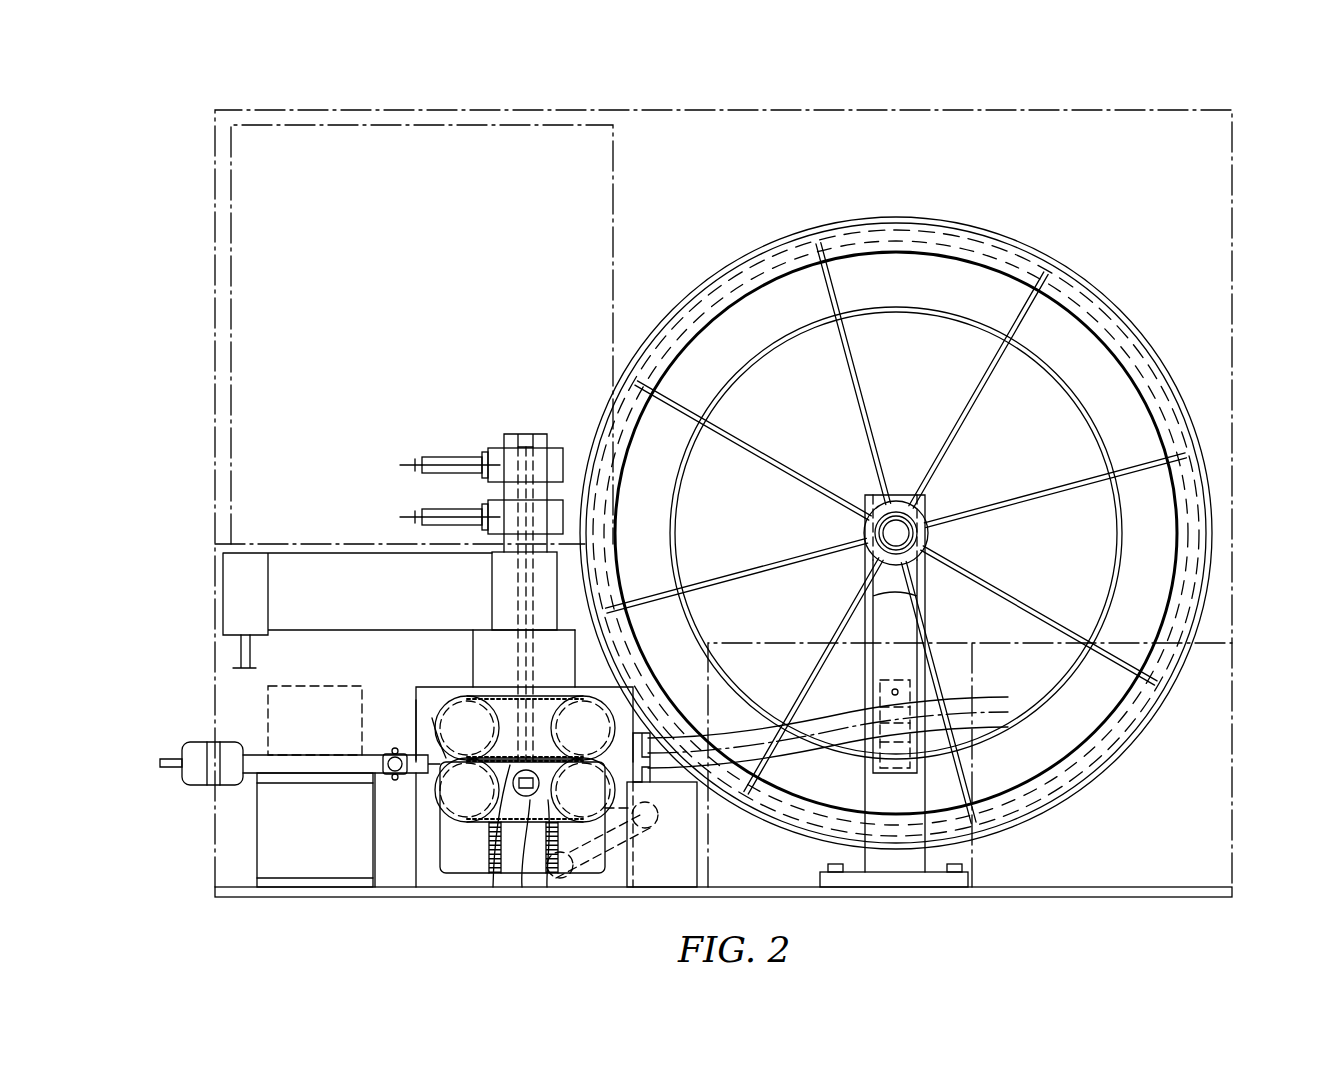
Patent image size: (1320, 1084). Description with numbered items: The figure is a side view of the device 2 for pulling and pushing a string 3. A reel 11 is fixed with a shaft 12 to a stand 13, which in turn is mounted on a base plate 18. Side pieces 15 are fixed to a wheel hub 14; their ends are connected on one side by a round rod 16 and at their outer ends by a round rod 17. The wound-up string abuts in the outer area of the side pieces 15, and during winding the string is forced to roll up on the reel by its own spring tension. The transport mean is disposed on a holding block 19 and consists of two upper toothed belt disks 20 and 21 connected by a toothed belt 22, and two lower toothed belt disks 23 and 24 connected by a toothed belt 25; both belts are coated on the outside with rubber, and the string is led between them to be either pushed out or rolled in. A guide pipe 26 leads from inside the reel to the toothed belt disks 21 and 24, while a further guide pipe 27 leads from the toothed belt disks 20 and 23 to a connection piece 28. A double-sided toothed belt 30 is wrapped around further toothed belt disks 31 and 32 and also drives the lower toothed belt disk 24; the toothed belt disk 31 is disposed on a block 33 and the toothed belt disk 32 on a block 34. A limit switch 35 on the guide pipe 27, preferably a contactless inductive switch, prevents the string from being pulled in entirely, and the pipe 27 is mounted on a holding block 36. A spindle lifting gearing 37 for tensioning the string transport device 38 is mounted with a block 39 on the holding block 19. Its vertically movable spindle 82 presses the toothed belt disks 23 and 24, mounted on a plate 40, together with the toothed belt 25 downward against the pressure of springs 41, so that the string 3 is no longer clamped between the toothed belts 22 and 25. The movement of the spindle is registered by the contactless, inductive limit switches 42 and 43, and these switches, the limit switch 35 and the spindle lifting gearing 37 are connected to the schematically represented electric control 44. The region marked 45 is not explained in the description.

The device 2 is at (1233, 201).
The string 3 is at (1135, 350).
The reel 11 is at (1022, 244).
The shaft 12 is at (900, 530).
The stand 13 is at (900, 876).
The wheel hub 14 is at (928, 505).
The side pieces 15 is at (818, 290).
The round rod 16 is at (898, 312).
The round rod 17 is at (828, 240).
The base plate 18 is at (1030, 897).
The holding block 19 is at (416, 690).
The upper toothed belt disk 20 is at (467, 728).
The upper toothed belt disk 21 is at (583, 728).
The toothed belt 22 is at (502, 695).
The lower toothed belt disk 23 is at (467, 790).
The lower toothed belt disk 24 is at (583, 790).
The toothed belt 25 is at (526, 796).
The guide pipe 26 is at (770, 736).
The guide pipe 27 is at (295, 753).
The connection piece 28 is at (192, 745).
The double-sided toothed belt 30 is at (596, 862).
The toothed belt disk 31 is at (648, 828).
The toothed belt disk 32 is at (556, 868).
The block 33 is at (698, 858).
The block 34 is at (495, 868).
The limit switch 35 is at (397, 778).
The holding block 36 is at (341, 821).
The spindle lifting gearing 37 is at (399, 610).
The string transport device 38 is at (416, 733).
The block 39 is at (524, 658).
The plate 40 is at (489, 845).
The springs 41 is at (538, 872).
The limit switch 42 is at (445, 460).
The limit switch 43 is at (420, 514).
The electric control 44 is at (422, 334).
The enclosure 45 is at (970, 765).
The spindle 82 is at (502, 541).